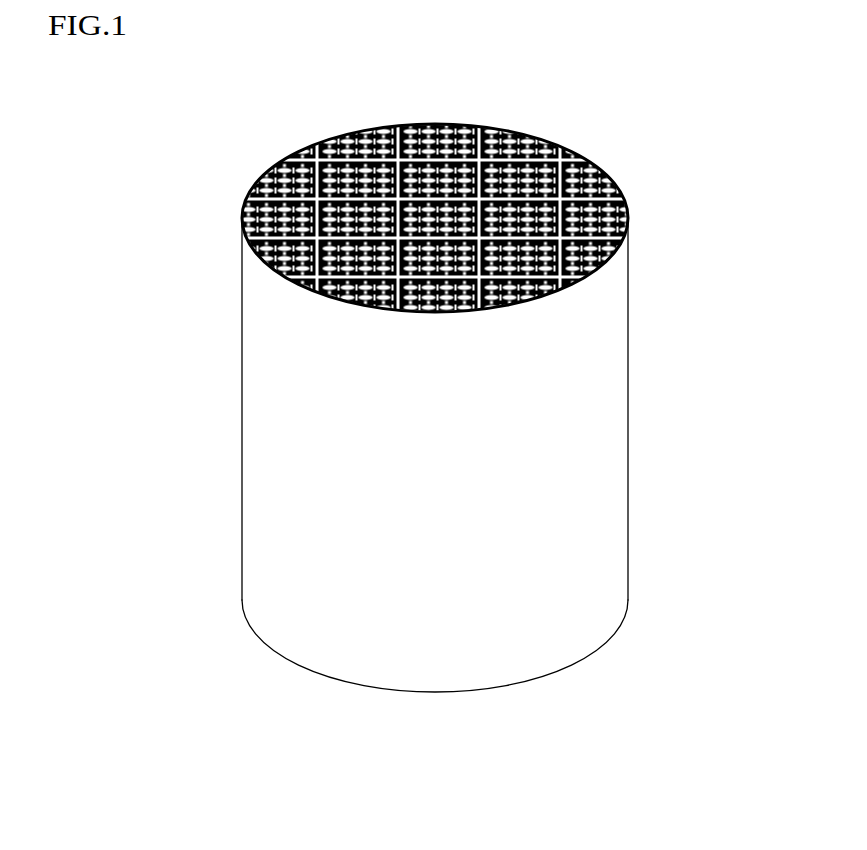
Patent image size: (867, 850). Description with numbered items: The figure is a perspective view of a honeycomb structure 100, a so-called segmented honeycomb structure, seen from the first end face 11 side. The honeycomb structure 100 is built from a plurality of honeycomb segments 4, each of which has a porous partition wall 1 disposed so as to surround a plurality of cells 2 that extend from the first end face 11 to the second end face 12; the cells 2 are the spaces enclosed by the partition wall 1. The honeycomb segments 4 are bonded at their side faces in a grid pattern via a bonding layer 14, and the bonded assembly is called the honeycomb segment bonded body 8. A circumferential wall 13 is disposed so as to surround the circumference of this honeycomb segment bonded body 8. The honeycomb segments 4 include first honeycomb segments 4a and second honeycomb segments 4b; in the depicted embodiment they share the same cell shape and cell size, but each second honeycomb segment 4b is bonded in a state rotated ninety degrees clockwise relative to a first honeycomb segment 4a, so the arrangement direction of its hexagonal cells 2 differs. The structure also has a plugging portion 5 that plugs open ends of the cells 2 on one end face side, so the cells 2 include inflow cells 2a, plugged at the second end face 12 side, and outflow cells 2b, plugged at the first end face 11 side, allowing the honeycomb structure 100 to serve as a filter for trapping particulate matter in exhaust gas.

The honeycomb structure 100 is at (722, 60).
The partition wall 1 is at (536, 163).
The cells 2 is at (580, 147).
The inflow cells 2a is at (555, 171).
The outflow cells 2b is at (567, 181).
The honeycomb segments 4 is at (269, 149).
The first honeycomb segments 4a is at (308, 189).
The second honeycomb segments 4b is at (368, 128).
The plugging portion 5 is at (502, 160).
The honeycomb segment bonded body 8 is at (627, 207).
The first end face 11 is at (271, 140).
The second end face 12 is at (264, 650).
The circumferential wall 13 is at (597, 338).
The bonding layer 14 is at (280, 274).